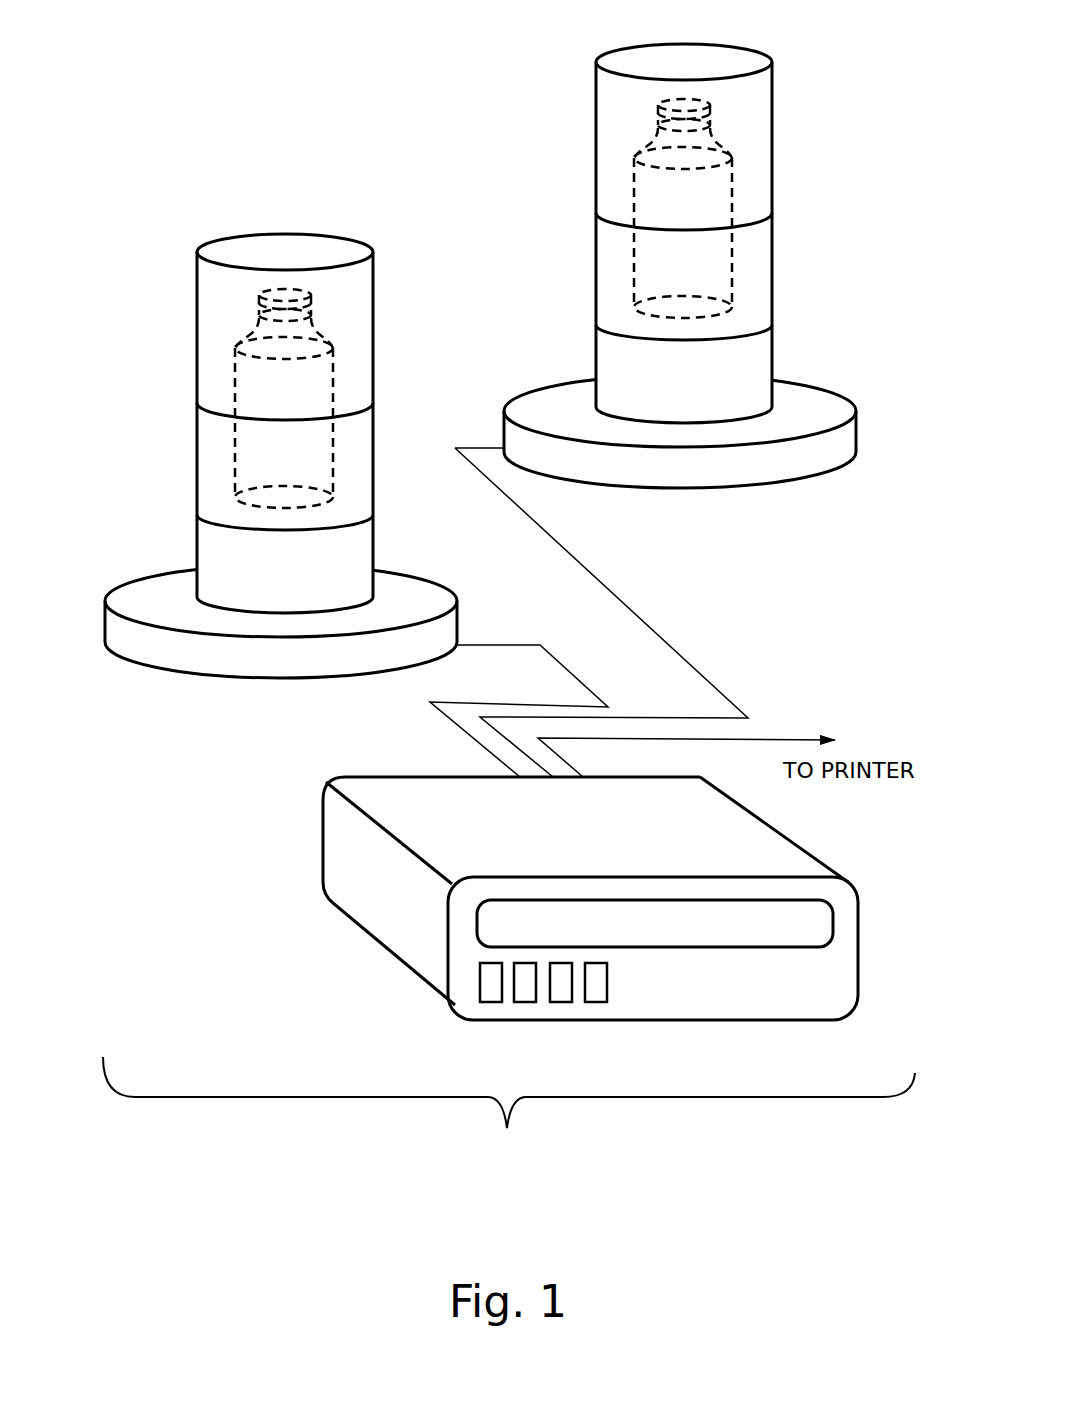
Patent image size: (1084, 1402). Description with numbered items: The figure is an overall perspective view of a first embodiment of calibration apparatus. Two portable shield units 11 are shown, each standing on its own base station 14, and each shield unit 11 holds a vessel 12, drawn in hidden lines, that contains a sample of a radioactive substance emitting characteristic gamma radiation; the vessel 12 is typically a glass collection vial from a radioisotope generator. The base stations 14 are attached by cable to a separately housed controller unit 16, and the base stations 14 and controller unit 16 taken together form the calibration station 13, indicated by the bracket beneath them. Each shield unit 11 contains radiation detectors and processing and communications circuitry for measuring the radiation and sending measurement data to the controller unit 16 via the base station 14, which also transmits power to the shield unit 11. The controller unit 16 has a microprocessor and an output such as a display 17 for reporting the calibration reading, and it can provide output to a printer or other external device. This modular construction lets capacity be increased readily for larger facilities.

The portable shield unit 11 is at (195, 338).
The vessel 12 is at (232, 449).
The calibration station 13 is at (509, 1120).
The base station 14 is at (188, 674).
The controller unit 16 is at (363, 940).
The display 17 is at (833, 915).